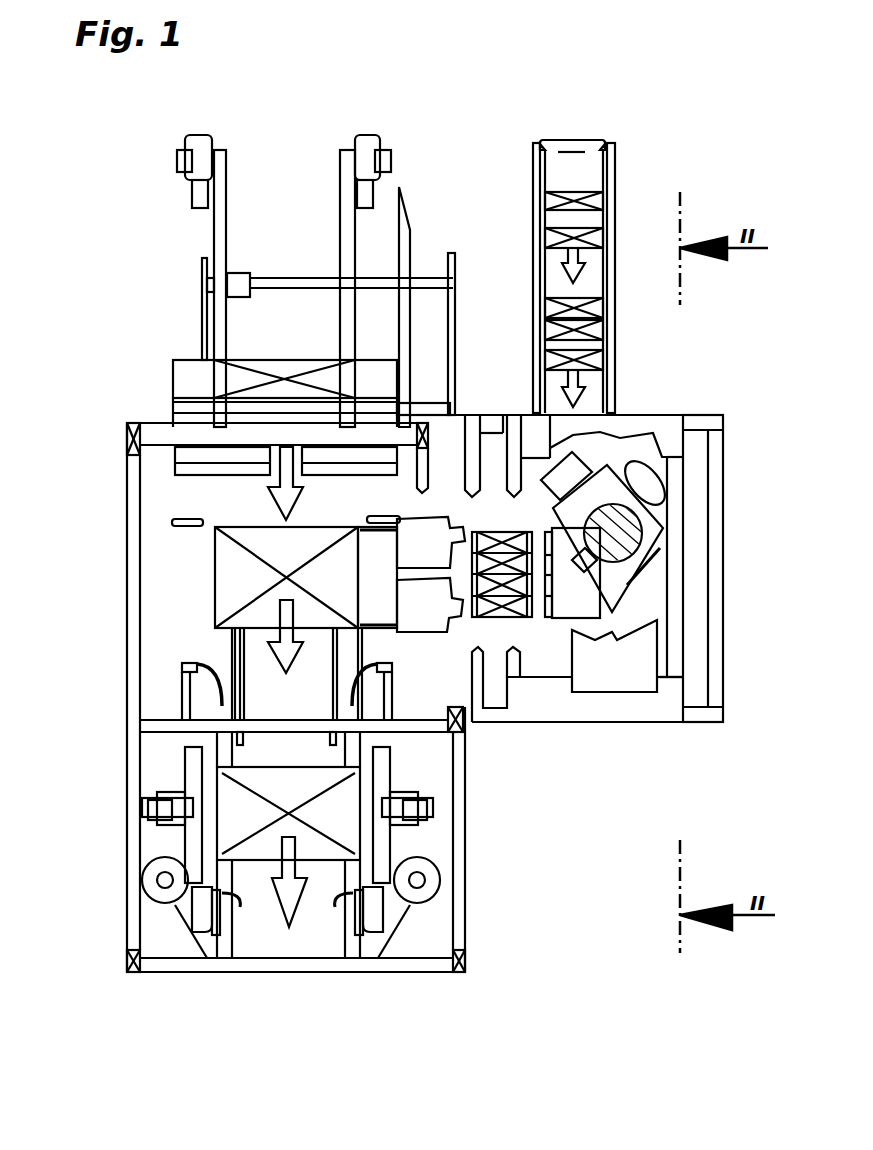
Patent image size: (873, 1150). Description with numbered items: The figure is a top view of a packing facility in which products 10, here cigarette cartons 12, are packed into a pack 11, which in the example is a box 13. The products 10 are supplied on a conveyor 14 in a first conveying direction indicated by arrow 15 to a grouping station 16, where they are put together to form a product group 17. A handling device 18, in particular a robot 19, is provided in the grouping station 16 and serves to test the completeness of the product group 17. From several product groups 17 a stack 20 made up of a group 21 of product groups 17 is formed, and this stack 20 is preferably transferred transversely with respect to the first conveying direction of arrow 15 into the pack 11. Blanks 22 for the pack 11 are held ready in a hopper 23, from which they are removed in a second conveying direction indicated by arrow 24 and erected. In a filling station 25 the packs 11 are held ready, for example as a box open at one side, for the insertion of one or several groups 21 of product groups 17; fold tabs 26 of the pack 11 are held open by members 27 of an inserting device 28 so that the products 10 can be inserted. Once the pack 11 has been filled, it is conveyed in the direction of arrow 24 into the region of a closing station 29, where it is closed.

The product 10 is at (530, 238).
The cigarette carton 12 is at (552, 197).
The pack 11 is at (192, 693).
The box 13 is at (233, 593).
The conveyor 14 is at (588, 278).
The arrow 15 is at (570, 257).
The grouping station 16 is at (637, 600).
The product group 17 is at (548, 620).
The handling device 18 is at (629, 441).
The robot 19 is at (615, 463).
The stack 20 is at (507, 687).
The group of product groups 21 is at (495, 620).
The blank 22 is at (193, 385).
The hopper 23 is at (180, 300).
The arrow 24 is at (285, 500).
The filling station 25 is at (195, 575).
The fold tab 26 is at (370, 625).
The member 27 is at (425, 607).
The inserting device 28 is at (451, 458).
The closing station 29 is at (173, 765).